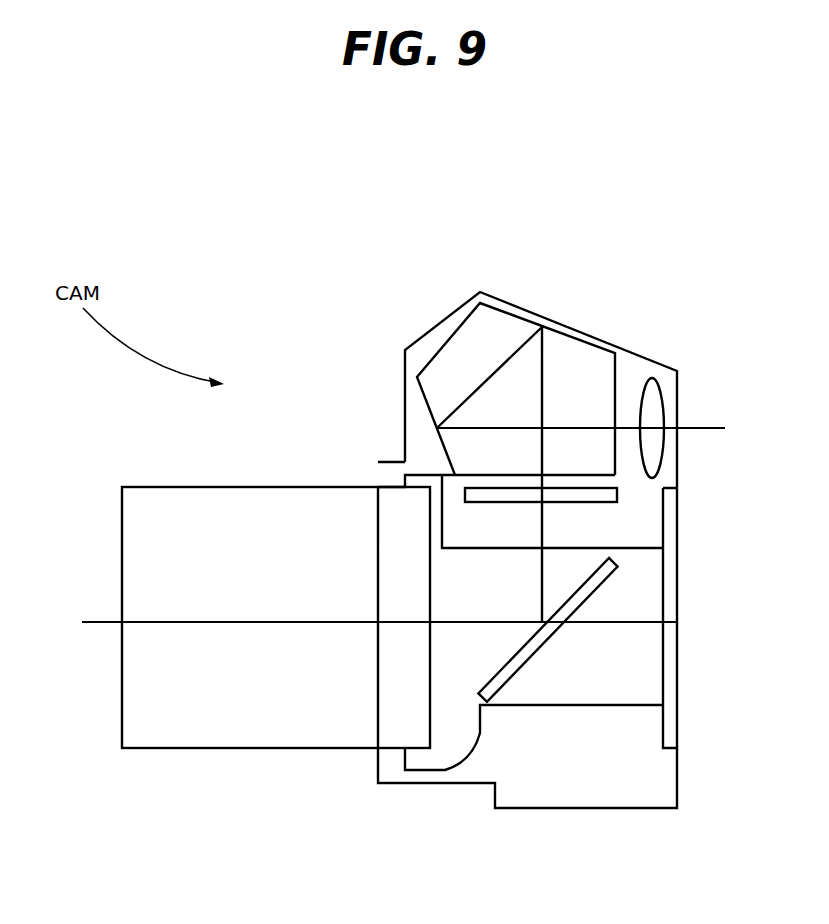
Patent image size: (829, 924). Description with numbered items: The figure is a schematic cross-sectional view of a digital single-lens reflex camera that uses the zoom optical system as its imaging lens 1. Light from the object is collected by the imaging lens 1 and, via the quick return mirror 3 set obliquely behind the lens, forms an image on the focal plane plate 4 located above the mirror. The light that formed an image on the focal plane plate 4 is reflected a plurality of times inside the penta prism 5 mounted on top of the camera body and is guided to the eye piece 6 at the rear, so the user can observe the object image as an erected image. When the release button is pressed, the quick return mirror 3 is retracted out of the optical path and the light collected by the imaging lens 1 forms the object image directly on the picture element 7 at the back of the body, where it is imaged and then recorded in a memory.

The imaging lens 1 is at (202, 500).
The quick return mirror 3 is at (535, 655).
The focal plane plate 4 is at (627, 505).
The penta prism 5 is at (553, 345).
The eye piece 6 is at (650, 405).
The picture element 7 is at (678, 603).